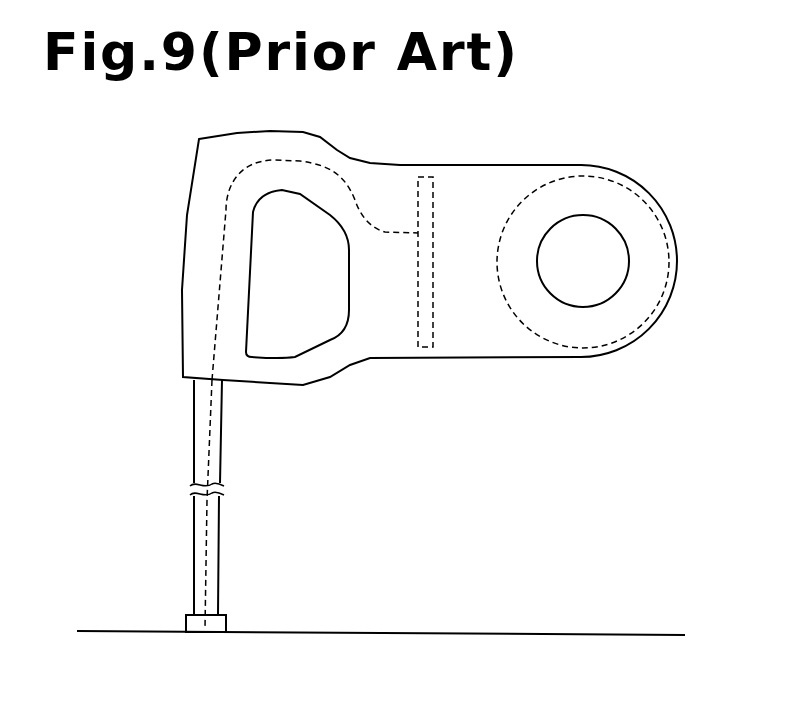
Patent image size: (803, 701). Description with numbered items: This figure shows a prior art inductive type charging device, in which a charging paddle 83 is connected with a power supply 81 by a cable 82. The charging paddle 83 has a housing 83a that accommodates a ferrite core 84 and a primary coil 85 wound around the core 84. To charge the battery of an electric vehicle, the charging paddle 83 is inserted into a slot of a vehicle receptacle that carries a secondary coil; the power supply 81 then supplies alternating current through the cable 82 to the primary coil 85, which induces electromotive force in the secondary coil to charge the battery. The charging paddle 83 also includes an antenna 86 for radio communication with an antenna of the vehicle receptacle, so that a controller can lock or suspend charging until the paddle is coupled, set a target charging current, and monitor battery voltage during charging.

The power supply 81 is at (478, 633).
The cable 82 is at (218, 530).
The charging paddle 83 is at (457, 163).
The housing 83a is at (518, 165).
The ferrite core 84 is at (618, 257).
The primary coil 85 is at (663, 297).
The antenna 86 is at (433, 322).